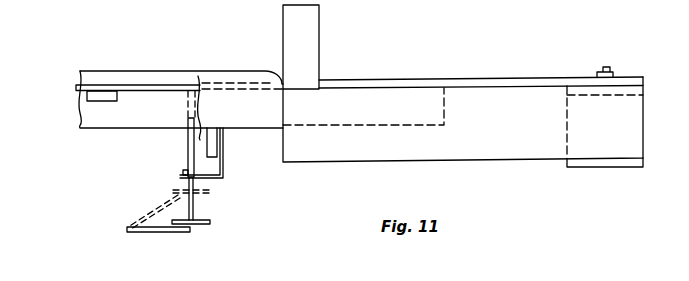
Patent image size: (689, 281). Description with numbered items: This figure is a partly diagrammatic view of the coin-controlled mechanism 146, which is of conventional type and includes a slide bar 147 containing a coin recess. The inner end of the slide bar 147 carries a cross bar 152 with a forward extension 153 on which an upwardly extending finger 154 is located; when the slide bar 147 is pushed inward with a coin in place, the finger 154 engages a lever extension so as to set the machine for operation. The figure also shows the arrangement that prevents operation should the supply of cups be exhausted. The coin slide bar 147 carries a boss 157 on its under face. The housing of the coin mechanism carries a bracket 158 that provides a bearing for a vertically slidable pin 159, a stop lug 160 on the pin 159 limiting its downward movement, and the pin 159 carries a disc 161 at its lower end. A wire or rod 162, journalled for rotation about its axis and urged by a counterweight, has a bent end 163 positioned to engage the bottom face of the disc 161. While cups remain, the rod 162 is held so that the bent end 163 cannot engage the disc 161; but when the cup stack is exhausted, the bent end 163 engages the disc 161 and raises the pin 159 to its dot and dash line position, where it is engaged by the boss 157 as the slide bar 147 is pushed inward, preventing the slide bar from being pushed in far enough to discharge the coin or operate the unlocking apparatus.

The coin-controlled mechanism 146 is at (136, 71).
The slide bar 147 is at (158, 92).
The cross bar 152 is at (590, 97).
The forward extension 153 is at (538, 159).
The finger 154 is at (319, 44).
The boss 157 is at (107, 98).
The bracket 158 is at (215, 177).
The pin 159 is at (188, 146).
The stop lug 160 is at (183, 171).
The disc 161 is at (207, 223).
The rod 162 is at (127, 228).
The bent end 163 is at (159, 233).